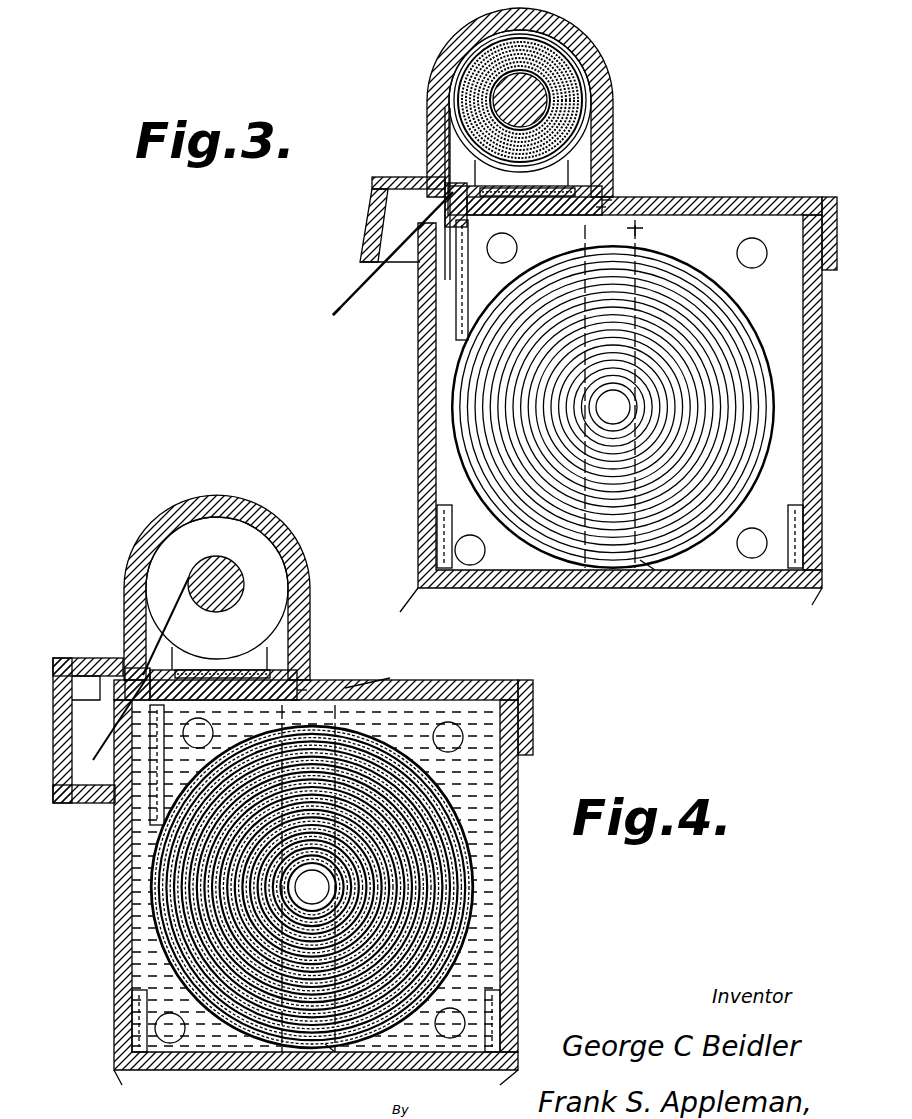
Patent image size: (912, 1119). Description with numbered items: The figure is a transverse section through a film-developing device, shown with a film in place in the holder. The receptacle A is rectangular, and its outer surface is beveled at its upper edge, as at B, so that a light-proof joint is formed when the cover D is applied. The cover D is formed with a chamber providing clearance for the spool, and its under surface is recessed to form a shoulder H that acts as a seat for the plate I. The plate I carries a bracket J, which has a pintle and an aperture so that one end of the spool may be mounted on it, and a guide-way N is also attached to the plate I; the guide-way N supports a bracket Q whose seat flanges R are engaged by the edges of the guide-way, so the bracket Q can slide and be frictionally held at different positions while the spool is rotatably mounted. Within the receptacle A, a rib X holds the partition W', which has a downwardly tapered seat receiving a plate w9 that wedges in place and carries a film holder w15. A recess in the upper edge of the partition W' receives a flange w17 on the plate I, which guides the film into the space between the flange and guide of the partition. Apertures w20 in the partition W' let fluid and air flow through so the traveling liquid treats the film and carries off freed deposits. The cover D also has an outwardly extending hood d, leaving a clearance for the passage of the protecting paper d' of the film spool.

In FIG. 3, the receptacle A is at (822, 585).
In FIG. 4, the receptacle A is at (518, 945).
In FIG. 3, the beveled surface B is at (806, 236).
In FIG. 4, the beveled surface B is at (520, 712).
In FIG. 3, the cover D is at (800, 212).
In FIG. 4, the cover D is at (445, 700).
In FIG. 3, the flange E' is at (799, 241).
In FIG. 4, the flange E' is at (545, 720).
In FIG. 3, the film roll housing F' is at (502, 102).
In FIG. 4, the film roll housing F' is at (217, 569).
In FIG. 3, the bracket Q is at (560, 60).
In FIG. 4, the bracket Q is at (245, 583).
In FIG. 3, the guide-way N is at (530, 212).
In FIG. 4, the guide-way N is at (200, 668).
In FIG. 3, the spring g is at (586, 198).
In FIG. 4, the spring g is at (200, 680).
In FIG. 3, the plate I is at (602, 200).
In FIG. 4, the plate I is at (300, 690).
In FIG. 3, the shoulder H is at (600, 207).
In FIG. 4, the shoulder H is at (300, 700).
In FIG. 3, the seat flanges R is at (444, 188).
In FIG. 4, the seat flanges R is at (142, 636).
In FIG. 3, the bracket J is at (440, 172).
In FIG. 3, the hood d is at (382, 219).
In FIG. 4, the hood d is at (81, 737).
In FIG. 3, the protecting paper d' is at (321, 294).
In FIG. 4, the protecting paper d' is at (116, 728).
In FIG. 3, the flange w17 is at (432, 212).
In FIG. 4, the flange w17 is at (130, 670).
In FIG. 3, the apertures w20 is at (502, 255).
In FIG. 4, the apertures w20 is at (455, 725).
In FIG. 3, the plate w9 is at (649, 232).
In FIG. 4, the plate w9 is at (379, 675).
In FIG. 3, the partition W' is at (618, 396).
In FIG. 4, the partition W' is at (348, 878).
In FIG. 3, the rib X is at (610, 605).
In FIG. 4, the rib X is at (316, 1087).
In FIG. 3, the film holder w15 is at (655, 570).
In FIG. 4, the film holder w15 is at (335, 1052).